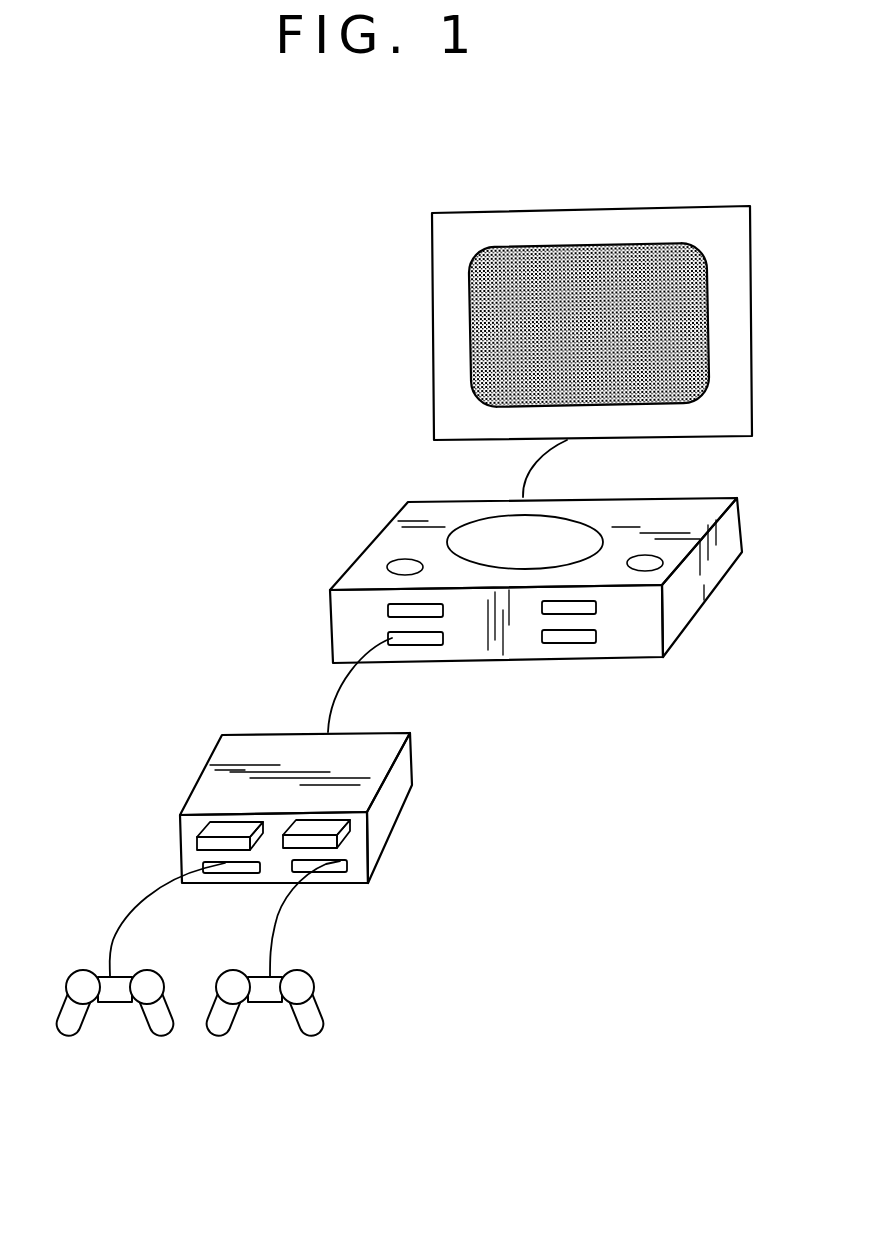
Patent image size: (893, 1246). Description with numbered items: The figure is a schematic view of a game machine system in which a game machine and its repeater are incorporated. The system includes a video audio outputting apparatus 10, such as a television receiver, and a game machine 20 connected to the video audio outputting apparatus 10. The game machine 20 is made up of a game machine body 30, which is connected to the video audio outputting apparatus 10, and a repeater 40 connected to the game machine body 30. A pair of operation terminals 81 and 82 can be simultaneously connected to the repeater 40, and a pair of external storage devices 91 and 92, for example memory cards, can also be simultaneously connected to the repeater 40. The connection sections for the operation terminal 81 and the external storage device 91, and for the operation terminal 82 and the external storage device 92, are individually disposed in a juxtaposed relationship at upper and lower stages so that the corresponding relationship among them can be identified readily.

The video audio outputting apparatus 10 is at (433, 330).
The game machine 20 is at (630, 970).
The game machine body 30 is at (527, 660).
The repeater 40 is at (287, 824).
The operation terminal 81 is at (82, 1018).
The operation terminal 82 is at (232, 1018).
The external storage device 91 is at (212, 828).
The external storage device 92 is at (330, 828).